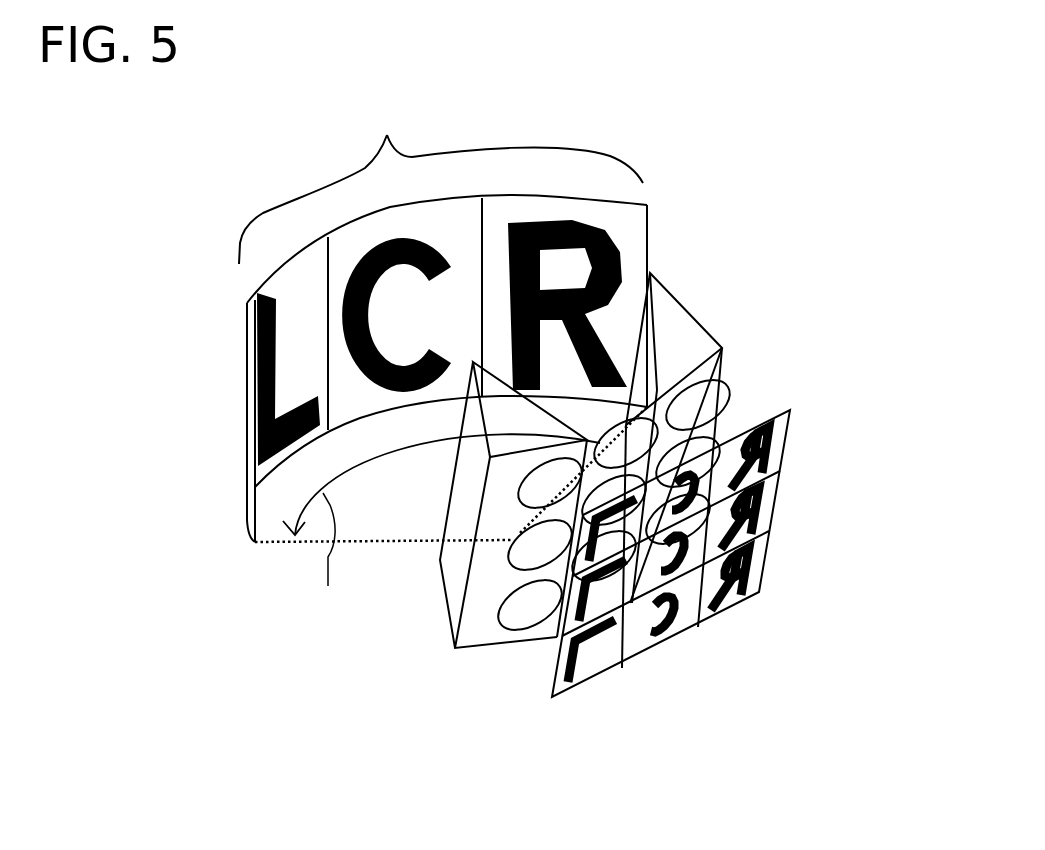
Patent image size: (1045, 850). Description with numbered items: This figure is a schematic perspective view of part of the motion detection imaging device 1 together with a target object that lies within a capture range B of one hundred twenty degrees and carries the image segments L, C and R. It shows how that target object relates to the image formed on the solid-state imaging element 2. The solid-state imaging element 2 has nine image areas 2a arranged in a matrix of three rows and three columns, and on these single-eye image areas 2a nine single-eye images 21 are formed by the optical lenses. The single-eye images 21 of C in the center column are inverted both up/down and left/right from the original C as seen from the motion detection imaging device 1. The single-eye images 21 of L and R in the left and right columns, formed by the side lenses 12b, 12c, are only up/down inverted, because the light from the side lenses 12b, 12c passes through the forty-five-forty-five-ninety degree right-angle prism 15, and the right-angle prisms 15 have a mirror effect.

The motion detection imaging device 1 is at (885, 278).
The solid-state imaging element 2 is at (777, 407).
The image area 2a is at (648, 623).
The side lens 12b is at (700, 400).
The side lens 12c is at (537, 485).
The 45-45-90 degree right-angle prism 15 is at (672, 322).
The single-eye image 21 is at (575, 620).
The capture range B is at (441, 179).